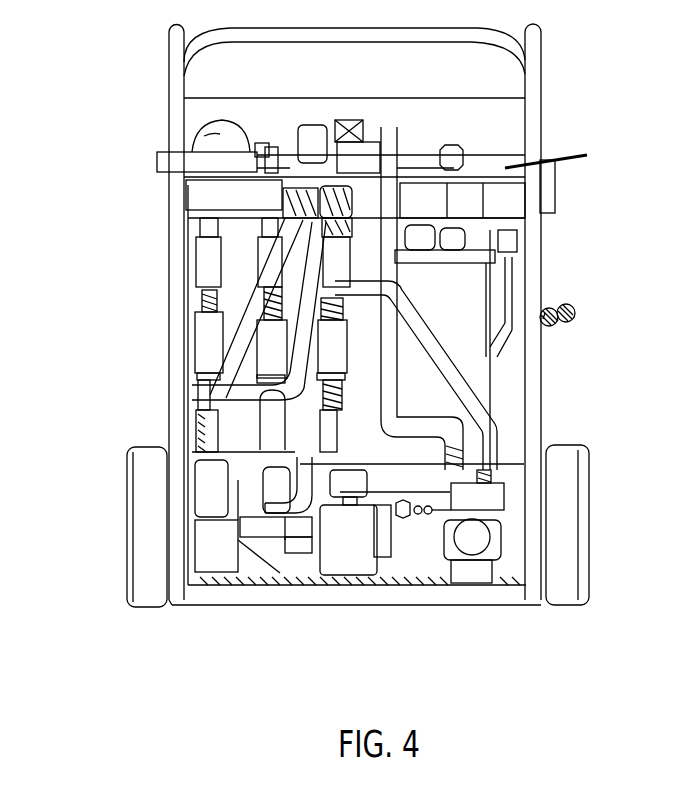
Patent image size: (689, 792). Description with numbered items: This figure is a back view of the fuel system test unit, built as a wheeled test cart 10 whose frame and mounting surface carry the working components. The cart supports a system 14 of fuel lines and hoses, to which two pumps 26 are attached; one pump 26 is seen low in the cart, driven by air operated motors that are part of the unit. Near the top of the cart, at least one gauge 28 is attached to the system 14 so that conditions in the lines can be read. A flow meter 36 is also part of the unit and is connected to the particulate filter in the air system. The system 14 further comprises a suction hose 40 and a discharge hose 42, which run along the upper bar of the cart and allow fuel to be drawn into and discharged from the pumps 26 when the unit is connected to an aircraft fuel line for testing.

The test cart 10 is at (182, 338).
The system 14 is at (140, 246).
The pump 26 is at (474, 567).
The gauge 28 is at (185, 140).
The flow meter 36 is at (473, 153).
The suction hose 40 is at (563, 156).
The discharge hose 42 is at (163, 160).